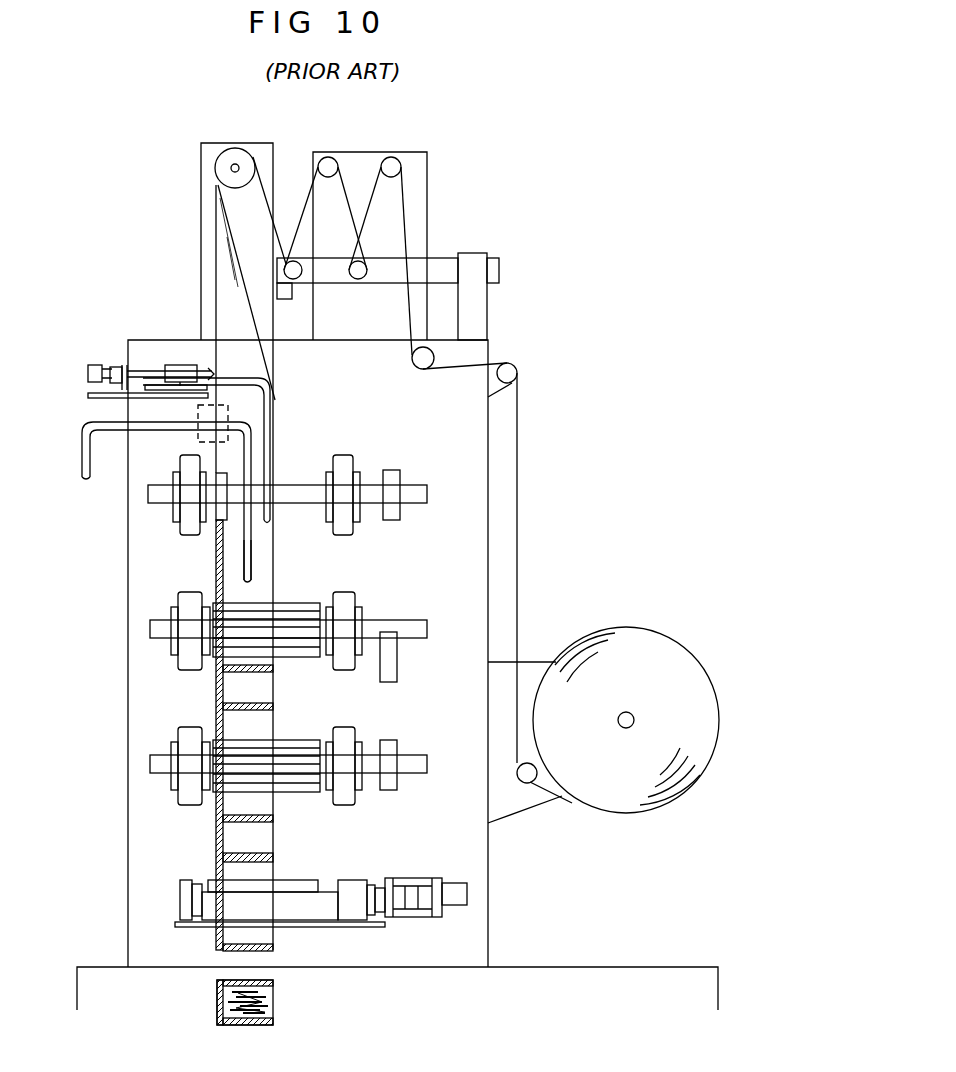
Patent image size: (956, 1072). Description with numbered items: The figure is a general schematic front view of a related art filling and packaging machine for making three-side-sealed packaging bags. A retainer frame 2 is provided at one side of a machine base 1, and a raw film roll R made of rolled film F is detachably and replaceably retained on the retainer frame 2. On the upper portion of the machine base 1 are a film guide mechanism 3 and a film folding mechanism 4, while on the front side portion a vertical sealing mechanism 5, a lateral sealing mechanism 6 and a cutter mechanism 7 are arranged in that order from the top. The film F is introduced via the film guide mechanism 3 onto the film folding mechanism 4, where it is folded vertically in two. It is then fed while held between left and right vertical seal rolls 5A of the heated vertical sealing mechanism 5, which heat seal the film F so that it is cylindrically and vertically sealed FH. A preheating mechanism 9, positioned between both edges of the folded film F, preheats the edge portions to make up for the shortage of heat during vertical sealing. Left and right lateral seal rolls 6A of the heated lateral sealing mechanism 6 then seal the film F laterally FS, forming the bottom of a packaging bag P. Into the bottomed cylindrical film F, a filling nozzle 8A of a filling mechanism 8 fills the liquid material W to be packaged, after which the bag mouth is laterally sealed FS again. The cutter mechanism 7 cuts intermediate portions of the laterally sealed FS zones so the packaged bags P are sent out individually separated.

The machine base 1 is at (469, 492).
The retainer frame 2 is at (631, 713).
The film guide mechanism 3 is at (450, 195).
The film folding mechanism 4 is at (156, 349).
The vertical sealing mechanism 5 is at (168, 510).
The vertical seal rolls 5A is at (222, 478).
The lateral sealing mechanism 6 is at (165, 652).
The lateral seal rolls 6A is at (300, 603).
The cutter mechanism 7 is at (170, 903).
The filling mechanism 8 is at (122, 412).
The filling nozzle 8A is at (248, 561).
The preheating mechanism 9 is at (222, 410).
The film F is at (235, 295).
The vertical seal FH is at (216, 548).
The lateral seal FS is at (245, 705).
The material to be packaged W is at (262, 1006).
The packaging bag P is at (213, 1022).
The raw film roll R is at (635, 635).